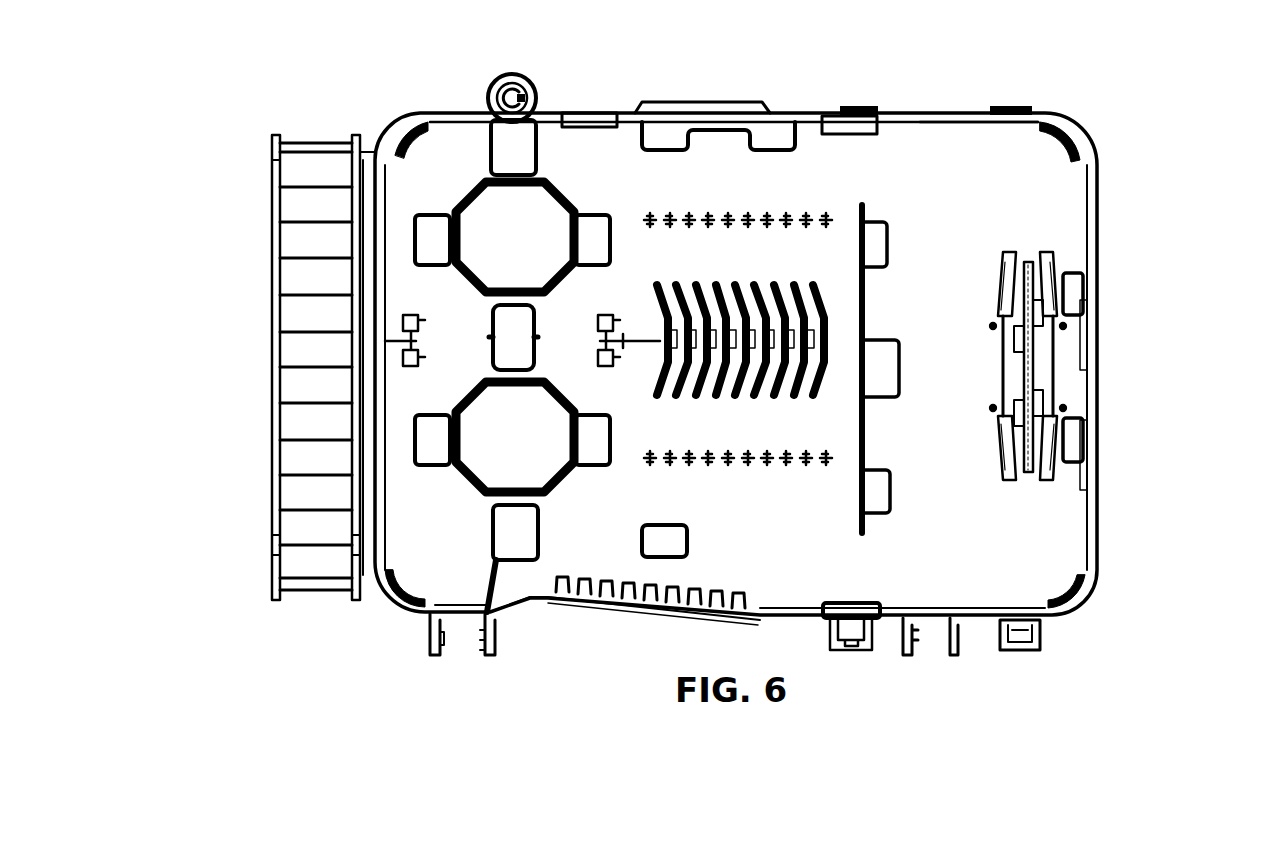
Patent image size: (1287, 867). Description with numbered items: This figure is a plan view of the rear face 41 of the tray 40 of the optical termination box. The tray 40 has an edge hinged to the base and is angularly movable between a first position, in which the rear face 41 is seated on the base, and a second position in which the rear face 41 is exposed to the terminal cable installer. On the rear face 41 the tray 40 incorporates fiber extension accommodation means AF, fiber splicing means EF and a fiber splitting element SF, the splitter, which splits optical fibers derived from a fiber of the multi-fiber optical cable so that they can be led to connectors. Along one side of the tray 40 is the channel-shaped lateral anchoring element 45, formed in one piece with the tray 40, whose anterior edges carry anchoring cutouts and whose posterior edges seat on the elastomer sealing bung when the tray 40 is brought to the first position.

The tray 40 is at (1108, 170).
The rear face 41 is at (966, 182).
The channel-shaped lateral anchoring element 45 is at (263, 493).
The fiber extension accommodation means AF is at (458, 488).
The fiber splicing means EF is at (724, 280).
The fiber splitting element SF is at (955, 473).